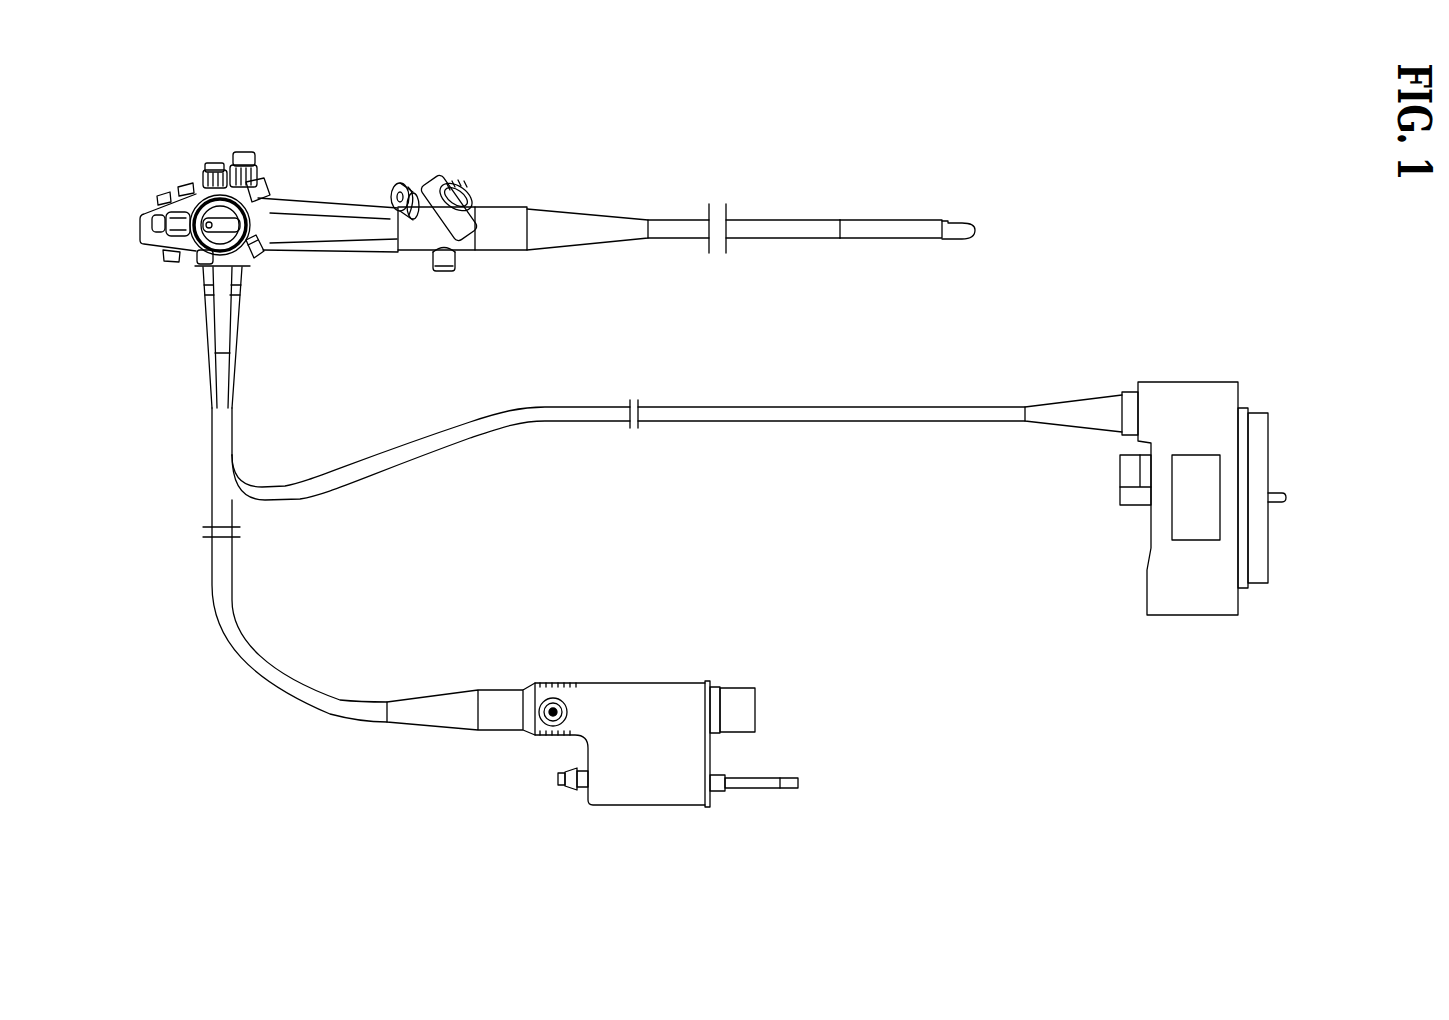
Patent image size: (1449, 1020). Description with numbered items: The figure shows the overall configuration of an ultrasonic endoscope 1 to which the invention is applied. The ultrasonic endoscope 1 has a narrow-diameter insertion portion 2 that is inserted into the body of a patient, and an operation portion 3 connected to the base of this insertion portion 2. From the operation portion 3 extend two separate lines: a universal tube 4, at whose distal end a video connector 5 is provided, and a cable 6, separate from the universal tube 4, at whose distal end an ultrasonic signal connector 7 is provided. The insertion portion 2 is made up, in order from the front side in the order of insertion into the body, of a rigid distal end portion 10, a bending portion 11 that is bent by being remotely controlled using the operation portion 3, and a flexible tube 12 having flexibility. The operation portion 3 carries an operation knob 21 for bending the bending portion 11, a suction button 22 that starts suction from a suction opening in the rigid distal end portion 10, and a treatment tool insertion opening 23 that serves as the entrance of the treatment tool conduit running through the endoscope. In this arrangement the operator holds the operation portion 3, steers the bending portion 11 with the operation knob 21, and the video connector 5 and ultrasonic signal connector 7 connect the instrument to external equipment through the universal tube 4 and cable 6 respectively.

The ultrasonic endoscope 1 is at (150, 160).
The insertion portion 2 is at (532, 196).
The operation portion 3 is at (313, 210).
The universal tube 4 is at (222, 569).
The video connector 5 is at (641, 702).
The cable 6 is at (719, 422).
The ultrasonic signal connector 7 is at (1185, 400).
The rigid distal end portion 10 is at (975, 258).
The bending portion 11 is at (841, 258).
The flexible tube 12 is at (527, 258).
The operation knob 21 is at (265, 254).
The suction button 22 is at (238, 150).
The treatment tool insertion opening 23 is at (412, 190).